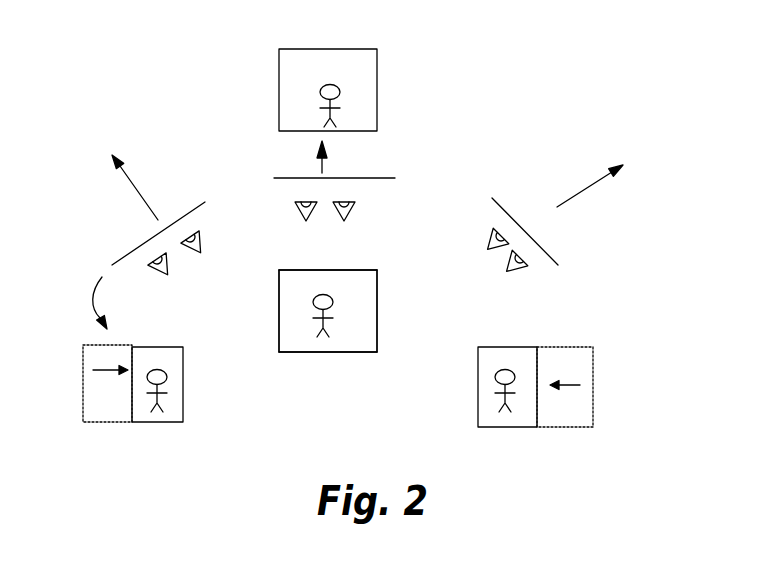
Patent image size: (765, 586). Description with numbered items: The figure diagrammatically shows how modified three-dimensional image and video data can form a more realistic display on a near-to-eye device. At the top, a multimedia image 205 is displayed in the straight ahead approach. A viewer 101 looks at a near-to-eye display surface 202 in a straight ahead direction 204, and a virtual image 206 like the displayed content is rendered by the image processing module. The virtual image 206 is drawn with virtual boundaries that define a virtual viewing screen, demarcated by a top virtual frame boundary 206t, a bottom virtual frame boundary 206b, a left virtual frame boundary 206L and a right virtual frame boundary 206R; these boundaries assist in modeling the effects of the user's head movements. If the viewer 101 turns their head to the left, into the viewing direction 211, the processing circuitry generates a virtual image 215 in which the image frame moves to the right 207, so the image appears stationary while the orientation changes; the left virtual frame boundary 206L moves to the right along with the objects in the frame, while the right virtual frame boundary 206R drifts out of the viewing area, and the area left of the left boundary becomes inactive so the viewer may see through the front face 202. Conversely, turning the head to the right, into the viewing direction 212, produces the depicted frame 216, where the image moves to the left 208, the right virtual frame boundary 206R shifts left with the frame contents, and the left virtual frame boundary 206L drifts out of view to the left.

The viewer 101 is at (325, 216).
The near-to-eye display surface 202 is at (390, 178).
The straight ahead direction 204 is at (323, 166).
The multimedia image 205 is at (377, 88).
The virtual image 206 is at (356, 314).
The top virtual frame boundary 206t is at (320, 251).
The bottom virtual frame boundary 206b is at (328, 352).
The left virtual frame boundary 206L is at (278, 320).
The right virtual frame boundary 206R is at (378, 333).
The frame movement to the right 207 is at (110, 368).
The image movement to the left 208 is at (568, 382).
The left viewing direction 211 is at (136, 190).
The right viewing direction 212 is at (581, 191).
The virtual image for left head turn 215 is at (170, 358).
The depicted frame for right head turn 216 is at (478, 422).